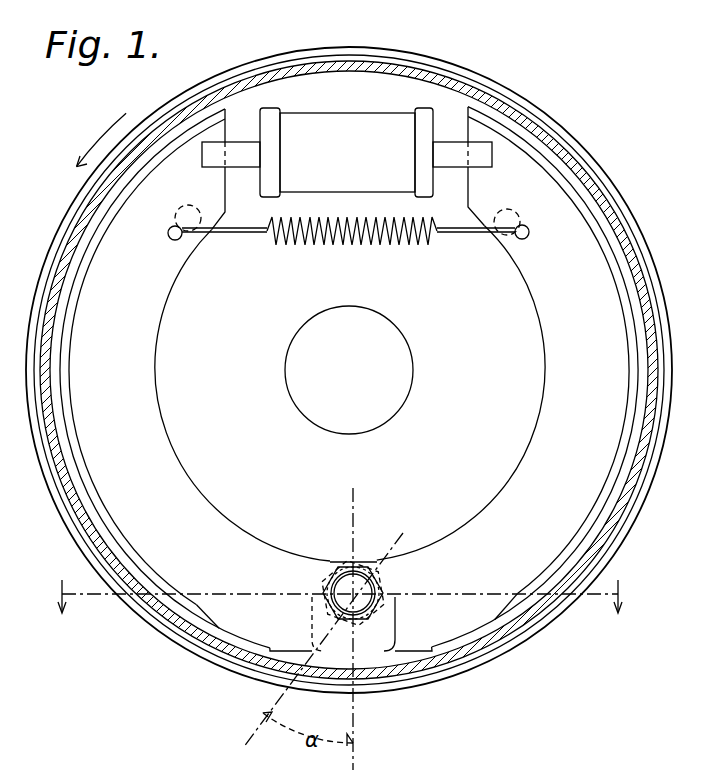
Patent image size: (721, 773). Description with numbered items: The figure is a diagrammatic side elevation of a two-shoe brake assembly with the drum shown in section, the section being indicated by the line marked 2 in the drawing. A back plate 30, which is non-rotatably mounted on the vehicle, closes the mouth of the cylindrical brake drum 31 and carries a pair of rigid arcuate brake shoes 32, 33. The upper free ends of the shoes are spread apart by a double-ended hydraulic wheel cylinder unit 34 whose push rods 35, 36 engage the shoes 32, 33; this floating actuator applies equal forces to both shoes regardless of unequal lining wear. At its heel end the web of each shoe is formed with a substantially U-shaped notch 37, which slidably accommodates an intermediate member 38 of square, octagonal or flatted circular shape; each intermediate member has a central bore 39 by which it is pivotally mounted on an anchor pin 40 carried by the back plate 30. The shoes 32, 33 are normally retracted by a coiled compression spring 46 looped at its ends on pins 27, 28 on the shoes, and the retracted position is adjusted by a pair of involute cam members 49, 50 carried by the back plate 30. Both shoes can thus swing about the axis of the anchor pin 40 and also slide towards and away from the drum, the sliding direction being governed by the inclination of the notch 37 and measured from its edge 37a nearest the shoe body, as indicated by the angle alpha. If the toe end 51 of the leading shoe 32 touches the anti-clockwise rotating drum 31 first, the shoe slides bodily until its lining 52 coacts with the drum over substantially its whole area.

The section line 2- 2 is at (340, 603).
The spring anchor pin 27 is at (168, 237).
The spring anchor pin 28 is at (529, 235).
The back plate 30 is at (297, 88).
The brake drum 31 is at (563, 148).
The brake shoe 32 is at (195, 380).
The brake shoe 33 is at (507, 379).
The hydraulic wheel cylinder unit 34 is at (383, 137).
The push rod 35 is at (242, 148).
The push rod 36 is at (453, 152).
The U-shaped notch 37 is at (372, 705).
The edge of notch 37a is at (333, 572).
The intermediate member 38 is at (362, 572).
The central bore 39 is at (368, 622).
The anchor pin 40 is at (343, 580).
The coiled compression spring 46 is at (300, 246).
The involute cam member 49 is at (178, 213).
The involute cam member 50 is at (508, 212).
The toe end 51 is at (192, 125).
The lining 52 is at (92, 230).